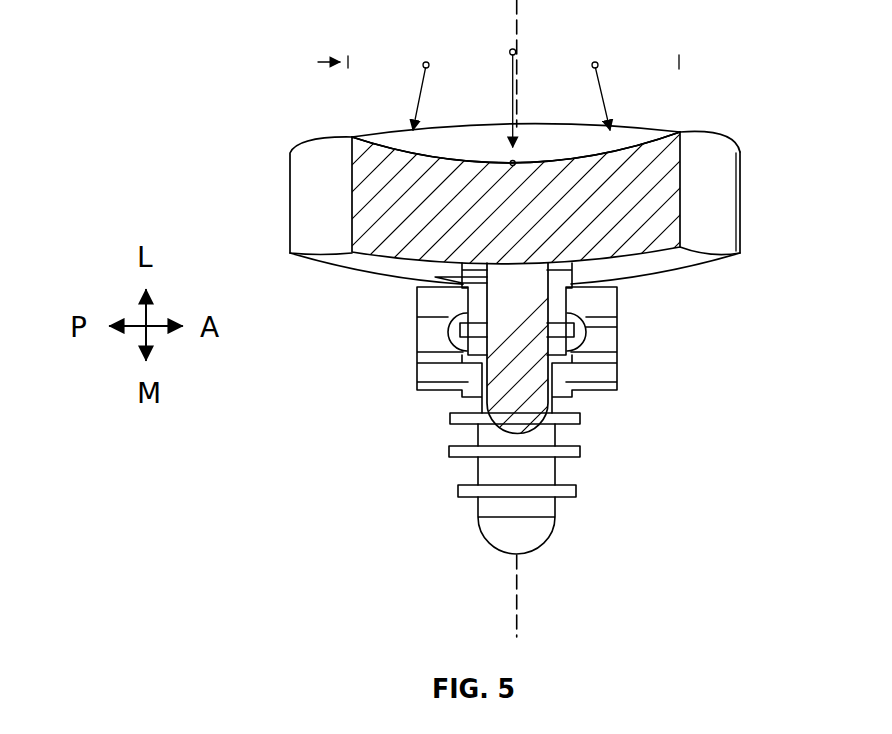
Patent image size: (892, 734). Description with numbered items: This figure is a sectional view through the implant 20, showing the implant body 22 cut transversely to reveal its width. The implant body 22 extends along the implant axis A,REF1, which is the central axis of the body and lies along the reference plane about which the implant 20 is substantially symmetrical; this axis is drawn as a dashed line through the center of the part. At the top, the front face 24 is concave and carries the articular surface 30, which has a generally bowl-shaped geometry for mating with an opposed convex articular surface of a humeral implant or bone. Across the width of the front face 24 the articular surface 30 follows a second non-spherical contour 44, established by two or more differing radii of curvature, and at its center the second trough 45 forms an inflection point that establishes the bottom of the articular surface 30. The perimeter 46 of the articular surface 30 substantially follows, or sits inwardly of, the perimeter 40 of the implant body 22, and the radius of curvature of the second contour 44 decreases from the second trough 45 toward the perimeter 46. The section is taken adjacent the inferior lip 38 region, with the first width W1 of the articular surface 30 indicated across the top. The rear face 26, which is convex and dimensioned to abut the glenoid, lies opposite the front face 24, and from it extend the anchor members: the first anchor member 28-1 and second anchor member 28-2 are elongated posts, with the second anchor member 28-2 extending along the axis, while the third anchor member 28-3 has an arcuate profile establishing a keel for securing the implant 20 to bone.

The implant 20 is at (280, 36).
The implant body 22 is at (392, 233).
The front face 24 is at (620, 137).
The articular surface 30 is at (516, 147).
The rear face 26 is at (663, 263).
The inferior lip 38 is at (546, 125).
The perimeter of the implant body 40 is at (728, 192).
The second non-spherical contour 44 is at (425, 142).
The second trough 45 is at (508, 162).
The perimeter of the articular surface 46 is at (718, 135).
The first anchor member 28-1 is at (532, 410).
The second anchor member 28-2 is at (543, 508).
The third anchor member 28-3 is at (615, 368).
The first width W1 is at (692, 62).
The implant axis and first reference plane A,REF1 is at (517, 583).